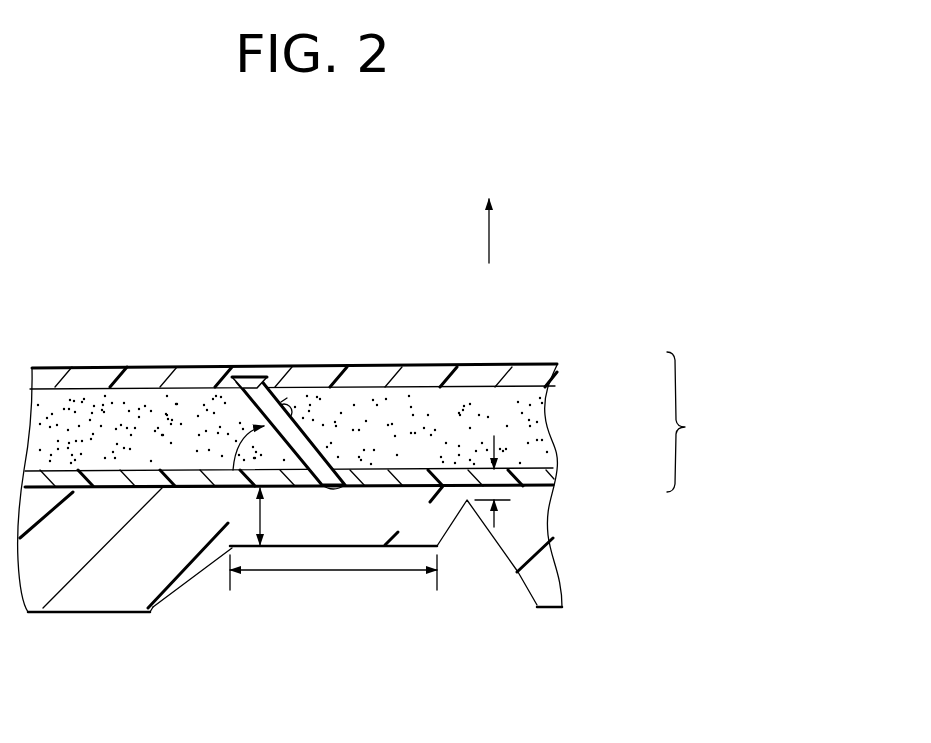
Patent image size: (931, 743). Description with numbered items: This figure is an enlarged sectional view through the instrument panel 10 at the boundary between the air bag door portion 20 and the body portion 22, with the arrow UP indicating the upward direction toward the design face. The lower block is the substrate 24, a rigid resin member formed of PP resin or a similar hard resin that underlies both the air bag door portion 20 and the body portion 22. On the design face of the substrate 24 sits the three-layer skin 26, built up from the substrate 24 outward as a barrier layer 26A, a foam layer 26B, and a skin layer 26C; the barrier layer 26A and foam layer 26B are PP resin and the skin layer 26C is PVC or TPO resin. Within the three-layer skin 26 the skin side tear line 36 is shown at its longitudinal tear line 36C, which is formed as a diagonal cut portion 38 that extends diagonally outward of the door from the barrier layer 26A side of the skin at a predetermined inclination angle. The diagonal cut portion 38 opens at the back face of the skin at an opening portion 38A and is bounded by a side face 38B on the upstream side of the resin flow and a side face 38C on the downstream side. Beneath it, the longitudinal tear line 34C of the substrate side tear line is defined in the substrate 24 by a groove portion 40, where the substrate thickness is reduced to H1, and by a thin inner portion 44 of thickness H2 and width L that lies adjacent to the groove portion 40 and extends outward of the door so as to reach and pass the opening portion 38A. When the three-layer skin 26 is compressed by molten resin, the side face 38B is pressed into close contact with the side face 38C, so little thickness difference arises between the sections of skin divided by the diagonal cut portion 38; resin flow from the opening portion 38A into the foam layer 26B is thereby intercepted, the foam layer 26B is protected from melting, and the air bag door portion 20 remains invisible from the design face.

The instrument panel 10 is at (402, 324).
The air bag door portion 20 is at (512, 356).
The body portion 22 is at (130, 362).
The substrate 24 is at (555, 567).
The three-layer skin 26 is at (699, 422).
The barrier layer 26A is at (540, 468).
The foam layer 26B is at (540, 428).
The skin layer 26C is at (553, 365).
The longitudinal tear line 34C is at (412, 620).
The skin side tear line 36 is at (242, 375).
The longitudinal tear line 36C is at (250, 375).
The diagonal cut portion 38 is at (301, 445).
The opening portion 38A is at (338, 488).
The side face 38B is at (268, 382).
The side face 38C is at (292, 388).
The groove portion 40 is at (522, 592).
The thin inner portion 44 is at (332, 548).
The substrate thickness at groove portion H1 is at (548, 502).
The thickness of thin inner portion H2 is at (257, 515).
The width of thin inner portion L is at (372, 572).
The up direction UP is at (485, 213).